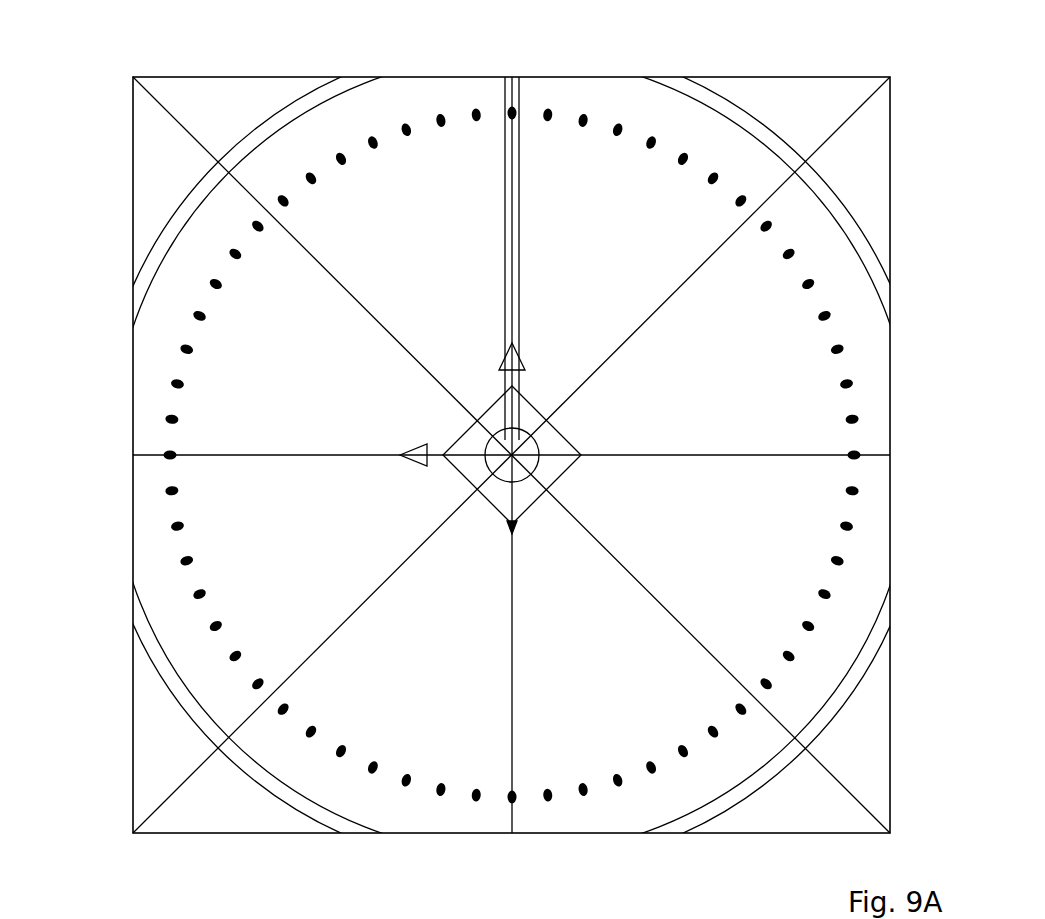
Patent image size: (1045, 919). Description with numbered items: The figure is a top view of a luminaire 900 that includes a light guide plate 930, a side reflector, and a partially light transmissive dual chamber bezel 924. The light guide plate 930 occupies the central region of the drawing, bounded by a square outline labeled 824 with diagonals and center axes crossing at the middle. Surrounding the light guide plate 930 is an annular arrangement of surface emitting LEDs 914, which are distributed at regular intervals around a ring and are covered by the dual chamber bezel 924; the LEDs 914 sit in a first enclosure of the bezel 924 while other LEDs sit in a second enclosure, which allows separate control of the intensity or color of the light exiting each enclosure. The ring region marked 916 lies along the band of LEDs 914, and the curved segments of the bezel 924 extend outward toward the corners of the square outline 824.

The luminaire 900 is at (226, 97).
The substrate boundary 824 is at (104, 562).
The surface emitting LEDs 914 is at (349, 760).
The annular ring region 916 is at (375, 790).
The partially light transmissive dual chamber bezel 924 is at (633, 807).
The light guide plate 930 is at (606, 697).